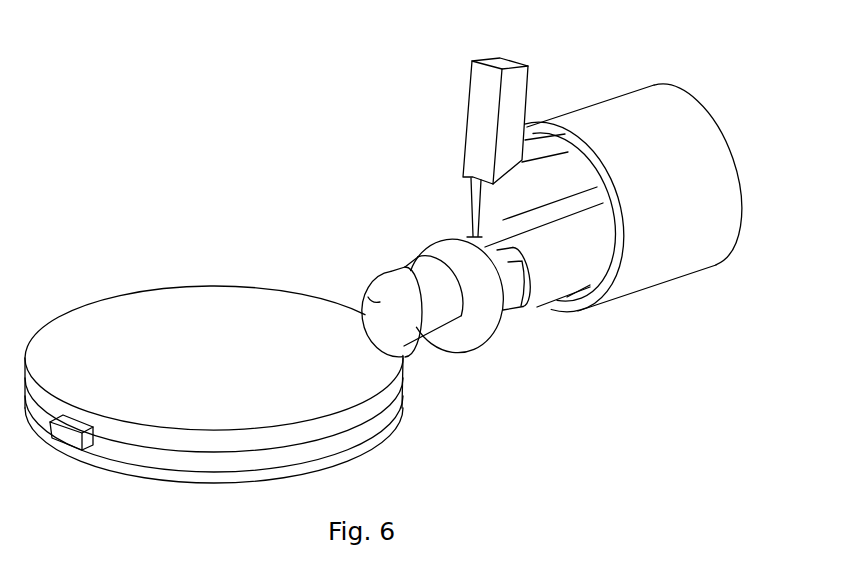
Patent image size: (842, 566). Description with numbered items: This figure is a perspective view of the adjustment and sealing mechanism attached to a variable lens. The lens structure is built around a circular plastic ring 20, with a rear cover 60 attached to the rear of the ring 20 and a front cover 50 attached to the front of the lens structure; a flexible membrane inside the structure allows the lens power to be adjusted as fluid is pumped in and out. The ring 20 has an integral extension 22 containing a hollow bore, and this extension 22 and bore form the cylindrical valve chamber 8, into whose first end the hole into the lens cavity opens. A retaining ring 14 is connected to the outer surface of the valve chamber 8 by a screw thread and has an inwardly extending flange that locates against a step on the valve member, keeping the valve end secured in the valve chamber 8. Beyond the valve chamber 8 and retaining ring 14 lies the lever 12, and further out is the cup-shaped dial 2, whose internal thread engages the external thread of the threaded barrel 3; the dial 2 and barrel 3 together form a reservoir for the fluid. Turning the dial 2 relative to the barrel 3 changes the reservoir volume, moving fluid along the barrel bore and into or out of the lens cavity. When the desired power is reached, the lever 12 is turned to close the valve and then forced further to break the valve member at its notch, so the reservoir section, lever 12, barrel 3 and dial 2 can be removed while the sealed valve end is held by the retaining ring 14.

The dial 2 is at (713, 135).
The threaded barrel 3 is at (578, 288).
The valve chamber 8 is at (431, 343).
The lever 12 is at (520, 82).
The retaining ring 14 is at (483, 333).
The plastic ring 20 is at (383, 413).
The integral extension 22 is at (366, 303).
The front cover 50 is at (203, 476).
The rear cover 60 is at (203, 296).